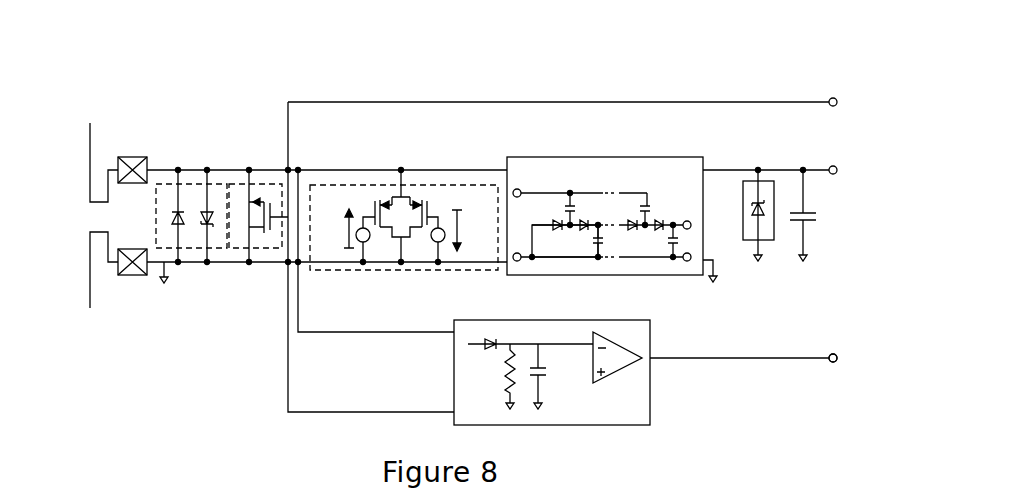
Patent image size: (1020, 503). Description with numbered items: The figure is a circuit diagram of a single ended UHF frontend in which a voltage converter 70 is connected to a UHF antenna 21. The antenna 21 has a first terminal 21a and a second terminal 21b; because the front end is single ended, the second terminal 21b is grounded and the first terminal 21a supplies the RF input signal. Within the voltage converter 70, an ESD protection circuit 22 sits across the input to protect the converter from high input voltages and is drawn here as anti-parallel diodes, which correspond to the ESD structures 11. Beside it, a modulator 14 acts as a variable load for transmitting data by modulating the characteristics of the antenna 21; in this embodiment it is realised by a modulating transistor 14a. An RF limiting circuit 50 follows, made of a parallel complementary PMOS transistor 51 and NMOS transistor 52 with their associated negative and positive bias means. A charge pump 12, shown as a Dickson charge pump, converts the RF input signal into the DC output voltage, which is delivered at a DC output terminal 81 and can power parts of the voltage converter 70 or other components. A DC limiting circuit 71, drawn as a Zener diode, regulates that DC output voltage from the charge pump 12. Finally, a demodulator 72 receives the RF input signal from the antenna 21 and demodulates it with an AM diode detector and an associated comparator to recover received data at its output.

The electro static discharge (ESD) structures 11 is at (177, 197).
The charge pump 12 is at (593, 157).
The modulator 14 is at (277, 181).
The modulating transistor 14a is at (277, 227).
The UHF antenna 21 is at (70, 148).
The first terminal 21a is at (83, 167).
The second terminal 21b is at (87, 257).
The ESD protection circuit 22 is at (200, 181).
The RF limiting circuit 50 is at (480, 181).
The PMOS transistor 51 is at (376, 207).
The NMOS transistor 52 is at (437, 207).
The voltage converter 70 is at (553, 121).
The DC limiting circuit 71 is at (743, 193).
The demodulator 72 is at (510, 320).
The DC output terminal 81 is at (836, 166).